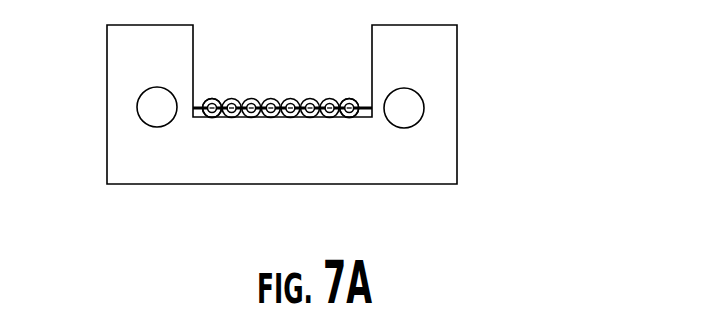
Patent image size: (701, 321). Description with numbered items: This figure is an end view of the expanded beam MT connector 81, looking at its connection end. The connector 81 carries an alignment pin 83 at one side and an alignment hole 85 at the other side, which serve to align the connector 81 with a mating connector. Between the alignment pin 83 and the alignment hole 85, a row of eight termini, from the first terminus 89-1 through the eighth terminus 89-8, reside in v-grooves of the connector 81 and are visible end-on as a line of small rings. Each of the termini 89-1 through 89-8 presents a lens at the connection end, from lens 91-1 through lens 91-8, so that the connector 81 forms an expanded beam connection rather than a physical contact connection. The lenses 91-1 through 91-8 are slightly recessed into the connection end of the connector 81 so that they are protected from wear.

The expanded beam MT connector 81 is at (474, 78).
The alignment pin 83 is at (160, 103).
The alignment hole 85 is at (408, 106).
The terminus 89-1 is at (212, 98).
The terminus 89-8 is at (349, 98).
The lens 91-1 is at (213, 118).
The lens 91-8 is at (350, 118).